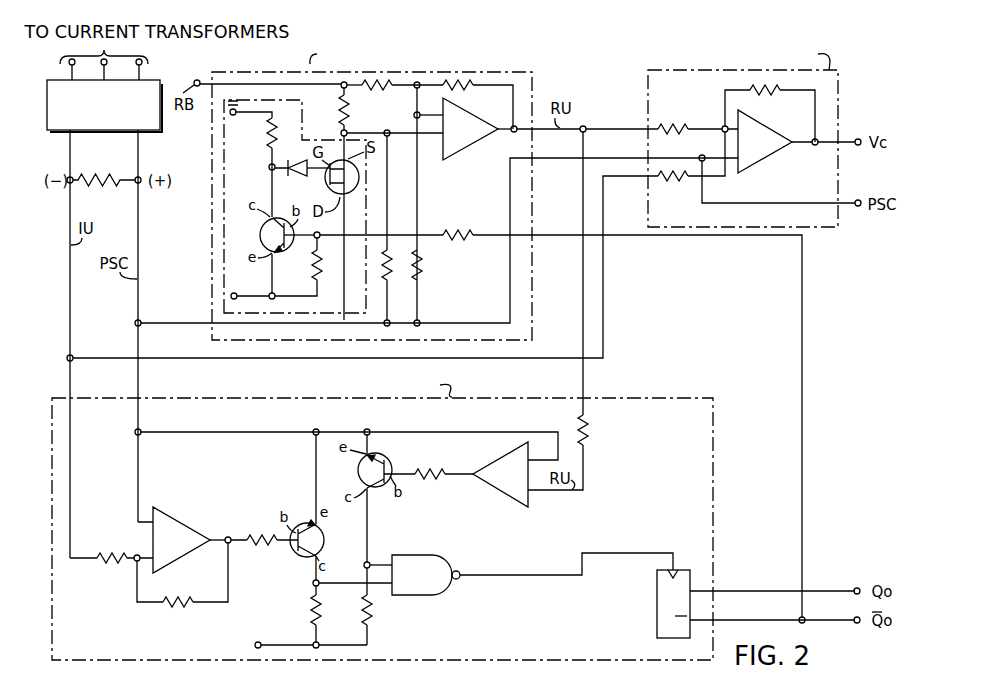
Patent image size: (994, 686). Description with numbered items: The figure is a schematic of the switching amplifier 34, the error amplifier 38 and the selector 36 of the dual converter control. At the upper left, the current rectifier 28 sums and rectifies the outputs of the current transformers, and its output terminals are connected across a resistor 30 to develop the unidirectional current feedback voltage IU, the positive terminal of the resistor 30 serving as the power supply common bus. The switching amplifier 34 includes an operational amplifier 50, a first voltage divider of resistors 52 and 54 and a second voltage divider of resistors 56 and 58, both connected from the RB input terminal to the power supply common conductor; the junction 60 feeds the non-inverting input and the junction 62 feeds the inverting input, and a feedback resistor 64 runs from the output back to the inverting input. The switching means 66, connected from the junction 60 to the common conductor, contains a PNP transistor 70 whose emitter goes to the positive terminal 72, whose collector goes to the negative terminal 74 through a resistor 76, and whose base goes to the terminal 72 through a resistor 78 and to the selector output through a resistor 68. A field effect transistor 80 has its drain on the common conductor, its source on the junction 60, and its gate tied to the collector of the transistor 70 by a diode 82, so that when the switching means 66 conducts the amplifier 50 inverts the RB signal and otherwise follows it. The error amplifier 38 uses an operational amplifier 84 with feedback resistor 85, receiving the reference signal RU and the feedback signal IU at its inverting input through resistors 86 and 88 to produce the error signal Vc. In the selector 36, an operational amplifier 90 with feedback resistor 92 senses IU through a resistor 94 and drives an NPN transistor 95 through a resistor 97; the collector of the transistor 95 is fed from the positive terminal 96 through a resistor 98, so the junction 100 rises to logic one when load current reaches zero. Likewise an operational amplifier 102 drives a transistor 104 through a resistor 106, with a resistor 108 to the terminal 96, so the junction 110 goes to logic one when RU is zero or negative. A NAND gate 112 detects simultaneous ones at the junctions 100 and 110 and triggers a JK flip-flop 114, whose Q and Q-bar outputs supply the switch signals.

The current rectifier 28 is at (162, 130).
The resistor 30 is at (104, 176).
The switching amplifier 34 is at (532, 94).
The selector 36 is at (716, 414).
The error amplifier 38 is at (648, 95).
The operational amplifier 50 is at (488, 140).
The resistor 52 is at (339, 104).
The resistor 54 is at (393, 280).
The resistor 56 is at (372, 91).
The resistor 58 is at (423, 270).
The junction 60 is at (342, 134).
The junction 62 is at (413, 115).
The feedback resistor 64 is at (468, 89).
The switching means 66 is at (224, 207).
The resistor 68 is at (474, 229).
The transistor 70 is at (262, 246).
The input terminal 72 is at (231, 293).
The input terminal 74 is at (224, 121).
The resistor 76 is at (264, 134).
The resistor 78 is at (313, 260).
The field effect transistor 80 is at (330, 180).
The diode 82 is at (285, 177).
The operational amplifier 84 is at (767, 124).
The feedback resistor 85 is at (748, 89).
The resistor 86 is at (681, 126).
The resistor 88 is at (684, 184).
The operational amplifier 90 is at (184, 518).
The feedback resistor 92 is at (178, 594).
The resistor 94 is at (104, 555).
The transistor 95 is at (325, 540).
The terminal 96 is at (258, 642).
The resistor 97 is at (262, 534).
The resistor 98 is at (310, 614).
The junction 100 is at (313, 582).
The operational amplifier 102 is at (502, 490).
The transistor 104 is at (377, 458).
The resistor 106 is at (434, 466).
The resistor 108 is at (372, 621).
The junction 110 is at (370, 560).
The NAND gate 112 is at (433, 556).
The JK flip-flop 114 is at (657, 585).